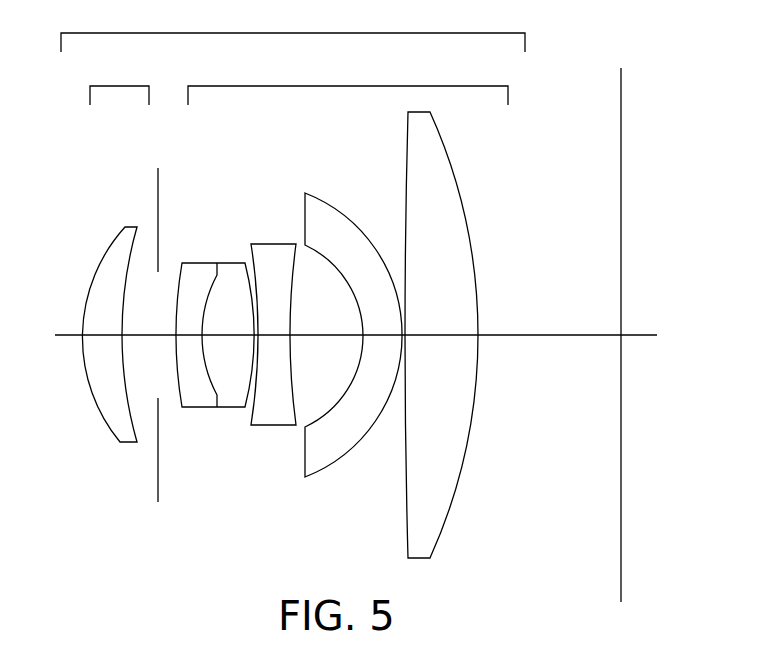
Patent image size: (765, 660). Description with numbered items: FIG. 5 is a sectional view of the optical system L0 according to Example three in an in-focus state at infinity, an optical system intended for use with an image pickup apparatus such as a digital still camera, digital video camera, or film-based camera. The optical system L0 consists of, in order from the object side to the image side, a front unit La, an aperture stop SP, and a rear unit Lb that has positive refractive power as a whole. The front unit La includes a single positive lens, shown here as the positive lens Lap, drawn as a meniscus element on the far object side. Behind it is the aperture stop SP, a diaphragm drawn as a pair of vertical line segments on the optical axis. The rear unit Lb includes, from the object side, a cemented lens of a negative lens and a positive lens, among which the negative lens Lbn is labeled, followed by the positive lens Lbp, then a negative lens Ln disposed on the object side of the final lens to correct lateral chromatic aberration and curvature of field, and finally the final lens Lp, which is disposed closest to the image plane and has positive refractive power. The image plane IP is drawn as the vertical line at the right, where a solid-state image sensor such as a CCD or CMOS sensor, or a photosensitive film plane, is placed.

The optical system L0 is at (293, 28).
The front unit La is at (119, 80).
The rear unit Lb is at (348, 80).
The aperture stop SP is at (158, 192).
The image plane IP is at (621, 70).
The positive lens Lap is at (123, 442).
The negative lens Lbn is at (203, 407).
The positive lens Lbp is at (232, 407).
The negative lens Ln is at (305, 477).
The final lens Lp is at (430, 558).